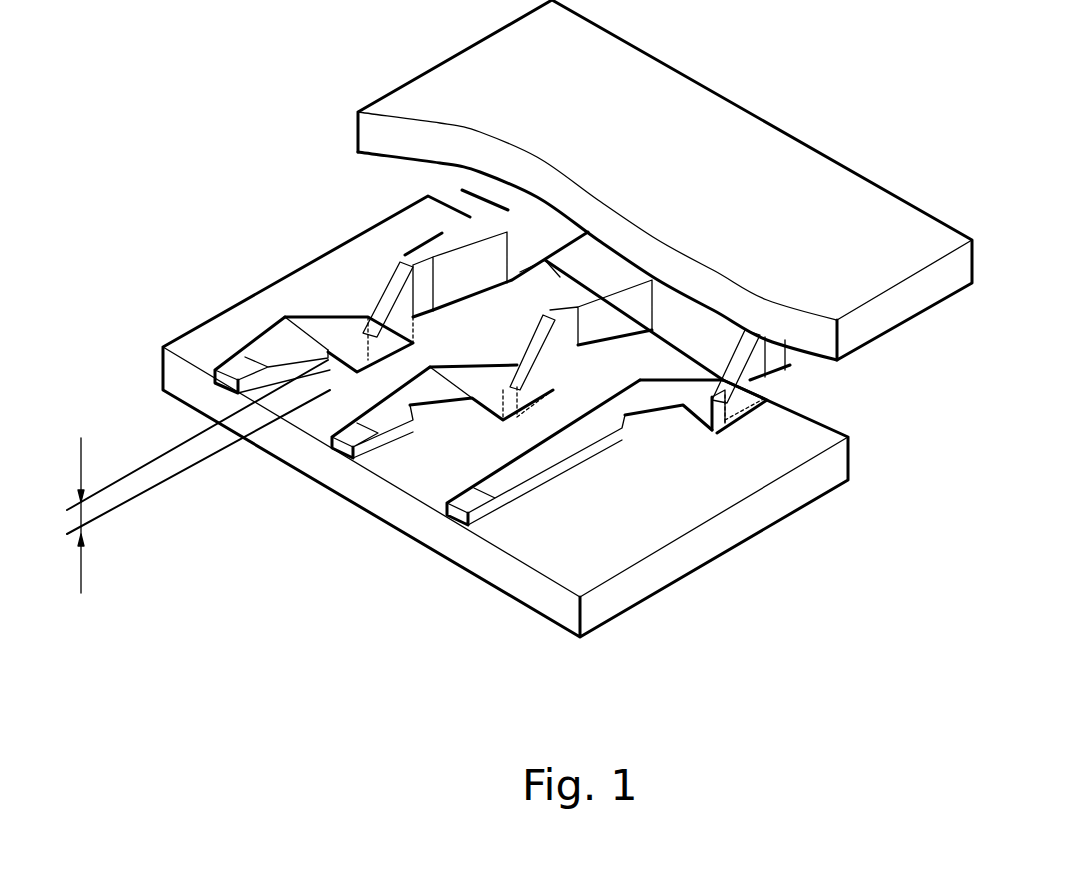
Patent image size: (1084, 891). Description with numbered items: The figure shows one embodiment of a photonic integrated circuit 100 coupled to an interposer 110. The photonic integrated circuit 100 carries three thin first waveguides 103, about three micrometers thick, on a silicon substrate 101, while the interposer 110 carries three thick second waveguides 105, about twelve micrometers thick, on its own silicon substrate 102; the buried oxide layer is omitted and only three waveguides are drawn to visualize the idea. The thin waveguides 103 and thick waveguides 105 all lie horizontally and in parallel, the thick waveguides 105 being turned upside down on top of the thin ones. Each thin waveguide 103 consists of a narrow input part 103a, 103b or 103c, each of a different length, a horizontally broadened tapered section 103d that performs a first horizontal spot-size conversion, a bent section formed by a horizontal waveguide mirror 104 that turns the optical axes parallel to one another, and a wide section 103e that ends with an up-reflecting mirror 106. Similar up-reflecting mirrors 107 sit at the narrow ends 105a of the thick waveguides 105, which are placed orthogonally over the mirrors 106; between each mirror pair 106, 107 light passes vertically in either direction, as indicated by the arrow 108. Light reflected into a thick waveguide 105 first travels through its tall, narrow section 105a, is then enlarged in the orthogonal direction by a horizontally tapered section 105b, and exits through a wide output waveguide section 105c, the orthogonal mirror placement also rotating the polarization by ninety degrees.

The photonic integrated circuit 100 is at (513, 357).
The silicon substrate 101 is at (607, 535).
The silicon substrate 102 is at (713, 180).
The first waveguide 103 is at (383, 479).
The input part 103a is at (208, 373).
The input part 103b is at (372, 422).
The input part 103c is at (527, 477).
The tapered section 103d is at (287, 337).
The 3×12 µm section 103e is at (368, 310).
The horizontal waveguide mirror 104 is at (350, 320).
The second waveguide 105 is at (587, 225).
The narrow end 105a is at (353, 345).
The horizontally tapered section 105b is at (460, 233).
The output waveguide section 105c is at (508, 212).
The up-reflecting mirror 106 is at (385, 357).
The up-reflecting mirror 107 is at (555, 272).
The arrow 108 is at (80, 515).
The interposer 110 is at (622, 180).